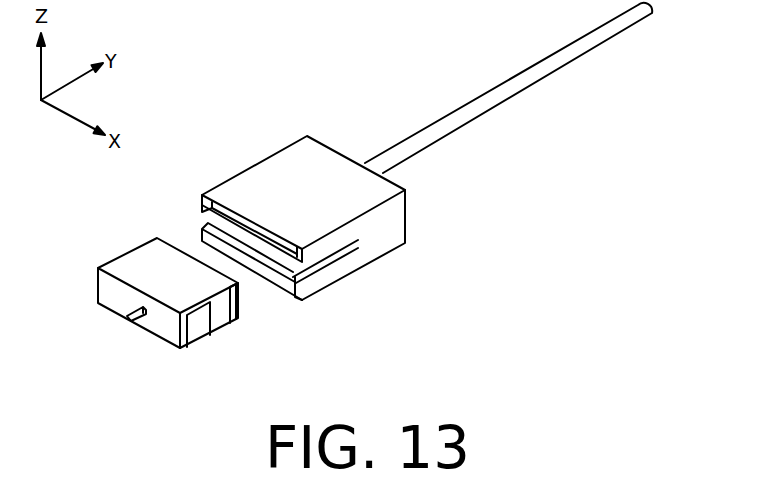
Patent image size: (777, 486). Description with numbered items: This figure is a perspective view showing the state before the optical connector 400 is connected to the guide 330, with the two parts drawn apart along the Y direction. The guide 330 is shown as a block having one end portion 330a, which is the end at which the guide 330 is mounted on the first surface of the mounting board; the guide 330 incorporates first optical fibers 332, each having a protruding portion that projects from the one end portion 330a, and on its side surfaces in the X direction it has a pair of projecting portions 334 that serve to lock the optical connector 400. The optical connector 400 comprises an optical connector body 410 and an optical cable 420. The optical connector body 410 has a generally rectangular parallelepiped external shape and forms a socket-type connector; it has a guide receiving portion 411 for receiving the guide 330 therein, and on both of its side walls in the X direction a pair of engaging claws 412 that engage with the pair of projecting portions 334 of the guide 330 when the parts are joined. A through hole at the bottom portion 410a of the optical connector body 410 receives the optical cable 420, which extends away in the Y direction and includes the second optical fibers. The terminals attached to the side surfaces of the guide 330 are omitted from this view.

The guide 330 is at (132, 262).
The one end portion 330a is at (108, 295).
The first optical fiber 332 is at (135, 323).
The projecting portion 334 is at (235, 323).
The optical connector 400 is at (378, 278).
The optical connector body 410 is at (253, 176).
The bottom portion 410a is at (337, 147).
The guide receiving portion 411 is at (280, 270).
The engaging claw 412 is at (347, 252).
The optical cable 420 is at (480, 97).